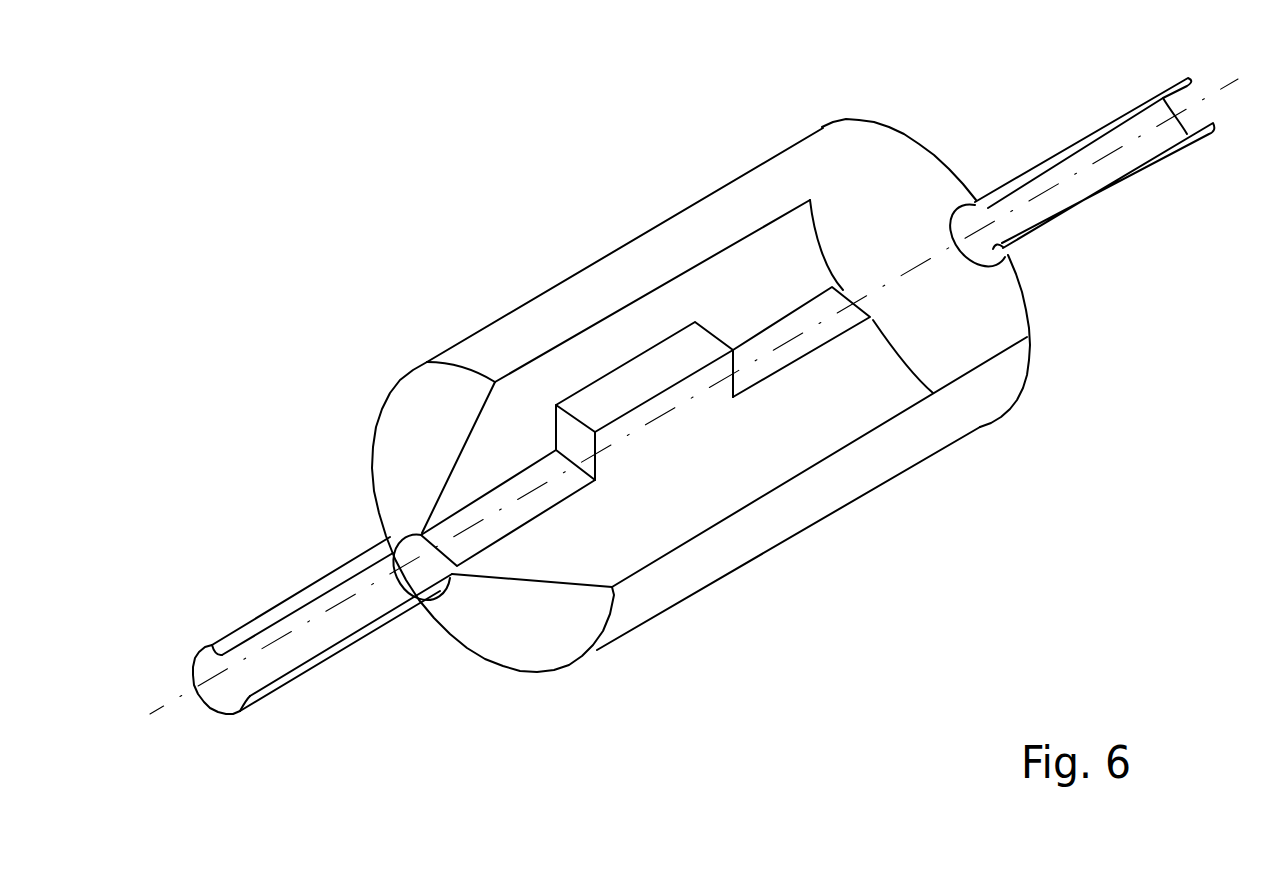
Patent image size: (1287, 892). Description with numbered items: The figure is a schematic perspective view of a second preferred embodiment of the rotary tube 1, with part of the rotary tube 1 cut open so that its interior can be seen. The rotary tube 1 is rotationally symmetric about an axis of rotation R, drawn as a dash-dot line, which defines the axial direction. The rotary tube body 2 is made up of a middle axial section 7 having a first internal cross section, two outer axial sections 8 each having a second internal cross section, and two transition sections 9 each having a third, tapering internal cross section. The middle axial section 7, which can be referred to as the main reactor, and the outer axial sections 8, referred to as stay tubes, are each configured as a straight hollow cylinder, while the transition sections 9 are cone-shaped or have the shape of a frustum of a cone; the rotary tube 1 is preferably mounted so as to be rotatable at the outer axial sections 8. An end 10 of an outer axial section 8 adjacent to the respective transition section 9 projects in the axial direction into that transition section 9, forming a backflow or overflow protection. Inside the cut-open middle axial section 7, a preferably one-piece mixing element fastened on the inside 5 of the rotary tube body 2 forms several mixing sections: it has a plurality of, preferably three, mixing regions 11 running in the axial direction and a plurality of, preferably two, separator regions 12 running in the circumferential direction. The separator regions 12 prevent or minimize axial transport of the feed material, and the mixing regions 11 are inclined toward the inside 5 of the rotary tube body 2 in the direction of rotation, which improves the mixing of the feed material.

The rotary tube 1 is at (243, 268).
The rotary tube body 2 is at (477, 350).
The inside of the rotary tube body 5 is at (690, 522).
The middle axial section 7 is at (847, 503).
The outer axial section 8 is at (323, 667).
The transition section 9 is at (1020, 307).
The end of the outer axial section 10 is at (447, 583).
The mixing region 11 is at (567, 427).
The separator region 12 is at (538, 480).
The axis of rotation R is at (1223, 90).